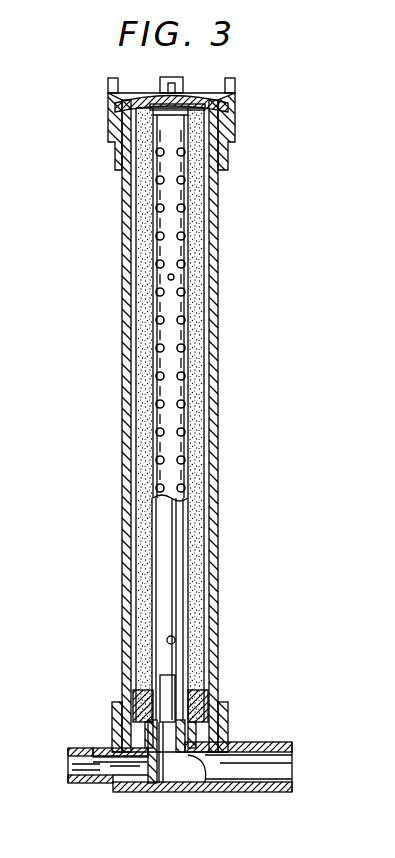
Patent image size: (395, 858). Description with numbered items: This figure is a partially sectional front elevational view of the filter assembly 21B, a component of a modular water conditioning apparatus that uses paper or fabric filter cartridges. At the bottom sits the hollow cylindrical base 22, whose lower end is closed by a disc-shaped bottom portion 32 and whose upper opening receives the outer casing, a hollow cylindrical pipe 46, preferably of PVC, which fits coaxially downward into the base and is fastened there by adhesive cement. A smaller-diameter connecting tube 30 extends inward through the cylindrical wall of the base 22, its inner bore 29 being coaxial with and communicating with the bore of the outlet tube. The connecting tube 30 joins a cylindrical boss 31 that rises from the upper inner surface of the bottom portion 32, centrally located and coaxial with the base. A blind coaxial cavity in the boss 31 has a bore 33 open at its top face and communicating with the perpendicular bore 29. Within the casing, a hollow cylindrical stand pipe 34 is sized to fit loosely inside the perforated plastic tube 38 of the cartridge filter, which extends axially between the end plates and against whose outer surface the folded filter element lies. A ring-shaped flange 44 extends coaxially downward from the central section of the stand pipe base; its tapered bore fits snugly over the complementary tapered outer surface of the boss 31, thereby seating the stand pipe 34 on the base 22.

The filter assembly 21B is at (262, 192).
The hollow cylindrical pipe 46 is at (217, 291).
The perforated plastic tube 38 is at (180, 380).
The stand pipe 34 is at (197, 546).
The hollow cylindrical base 22 is at (218, 707).
The ring-shaped flange 44 is at (208, 728).
The bore 33 is at (141, 744).
The inner bore 29 is at (120, 763).
The connecting tube 30 is at (150, 783).
The cylindrical boss 31 is at (192, 757).
The disc-shaped bottom portion 32 is at (230, 793).